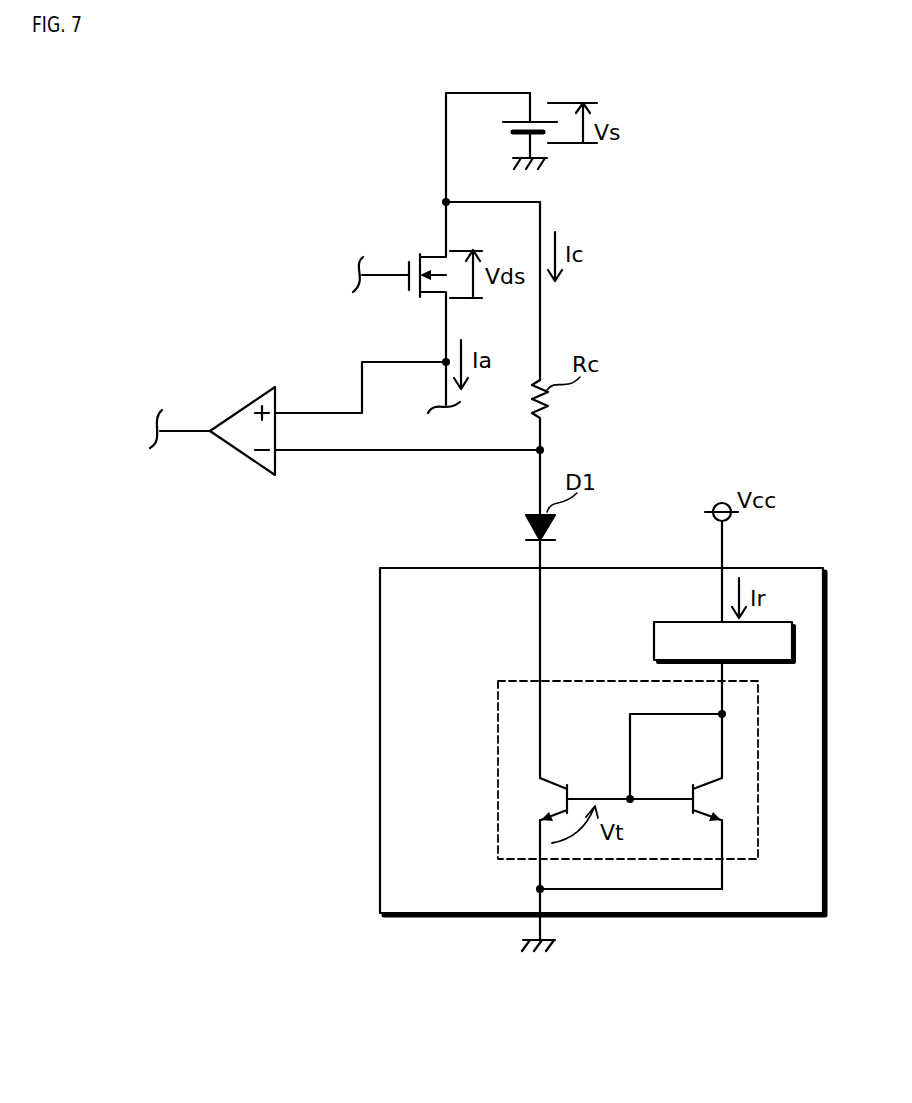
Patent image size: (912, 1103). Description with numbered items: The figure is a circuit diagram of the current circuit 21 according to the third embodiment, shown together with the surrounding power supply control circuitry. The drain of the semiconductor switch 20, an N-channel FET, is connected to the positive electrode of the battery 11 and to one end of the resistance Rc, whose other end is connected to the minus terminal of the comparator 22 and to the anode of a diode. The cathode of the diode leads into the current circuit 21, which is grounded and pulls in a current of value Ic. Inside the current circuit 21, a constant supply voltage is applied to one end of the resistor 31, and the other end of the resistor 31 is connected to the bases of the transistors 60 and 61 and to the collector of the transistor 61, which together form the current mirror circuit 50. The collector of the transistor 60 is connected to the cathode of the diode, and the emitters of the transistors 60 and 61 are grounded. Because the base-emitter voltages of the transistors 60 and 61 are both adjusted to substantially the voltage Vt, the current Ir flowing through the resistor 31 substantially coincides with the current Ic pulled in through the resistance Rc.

The battery 11 is at (507, 127).
The semiconductor switch 20 is at (415, 256).
The current circuit 21 is at (414, 566).
The comparator 22 is at (228, 417).
The resistor 31 is at (680, 618).
The current mirror circuit 50 is at (513, 679).
The transistor 60 is at (556, 773).
The transistor 61 is at (705, 772).